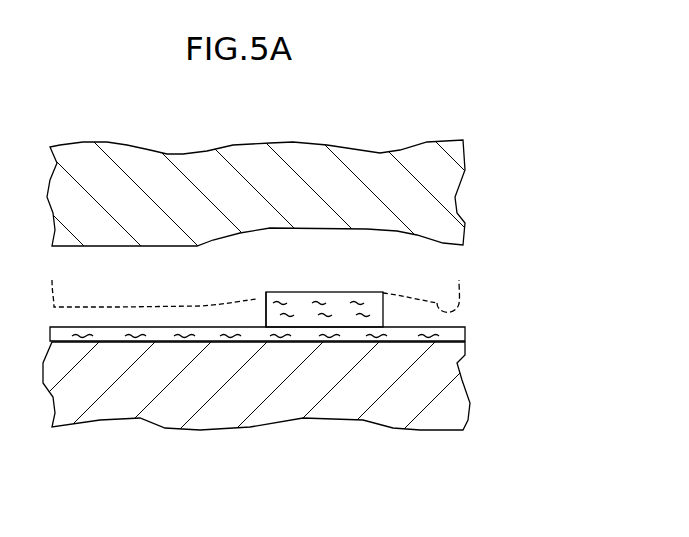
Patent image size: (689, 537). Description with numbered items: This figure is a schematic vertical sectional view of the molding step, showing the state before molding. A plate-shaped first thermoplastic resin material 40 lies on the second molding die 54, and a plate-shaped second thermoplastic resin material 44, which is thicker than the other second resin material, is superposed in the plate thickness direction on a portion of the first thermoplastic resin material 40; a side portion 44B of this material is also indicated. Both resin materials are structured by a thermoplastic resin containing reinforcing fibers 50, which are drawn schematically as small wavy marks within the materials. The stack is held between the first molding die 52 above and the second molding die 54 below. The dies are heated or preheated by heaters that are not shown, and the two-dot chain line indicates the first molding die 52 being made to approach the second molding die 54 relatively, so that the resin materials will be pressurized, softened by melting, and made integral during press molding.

The first molding die 52 is at (381, 165).
The second thermoplastic resin material 44 is at (346, 286).
The heater element side portion 44B is at (266, 309).
The reinforcing fibers 50 is at (292, 318).
The first thermoplastic resin material 40 is at (172, 327).
The second molding die 54 is at (390, 421).